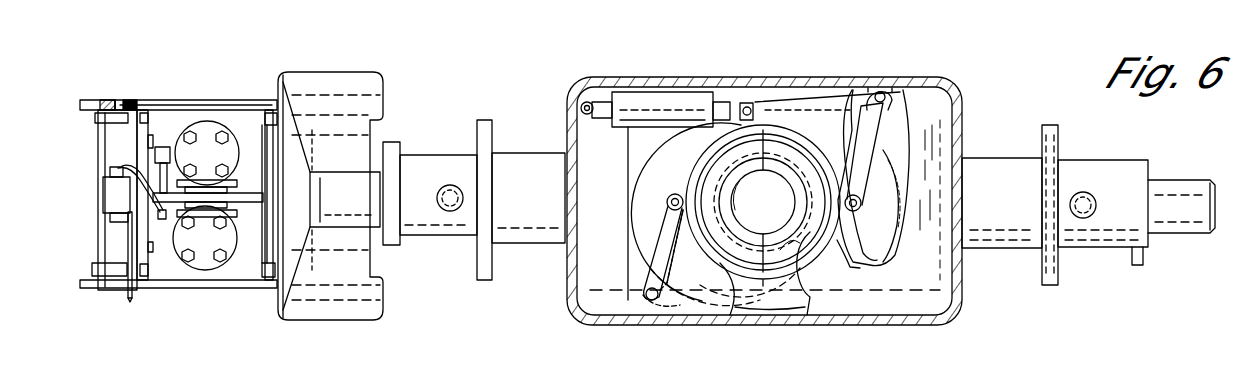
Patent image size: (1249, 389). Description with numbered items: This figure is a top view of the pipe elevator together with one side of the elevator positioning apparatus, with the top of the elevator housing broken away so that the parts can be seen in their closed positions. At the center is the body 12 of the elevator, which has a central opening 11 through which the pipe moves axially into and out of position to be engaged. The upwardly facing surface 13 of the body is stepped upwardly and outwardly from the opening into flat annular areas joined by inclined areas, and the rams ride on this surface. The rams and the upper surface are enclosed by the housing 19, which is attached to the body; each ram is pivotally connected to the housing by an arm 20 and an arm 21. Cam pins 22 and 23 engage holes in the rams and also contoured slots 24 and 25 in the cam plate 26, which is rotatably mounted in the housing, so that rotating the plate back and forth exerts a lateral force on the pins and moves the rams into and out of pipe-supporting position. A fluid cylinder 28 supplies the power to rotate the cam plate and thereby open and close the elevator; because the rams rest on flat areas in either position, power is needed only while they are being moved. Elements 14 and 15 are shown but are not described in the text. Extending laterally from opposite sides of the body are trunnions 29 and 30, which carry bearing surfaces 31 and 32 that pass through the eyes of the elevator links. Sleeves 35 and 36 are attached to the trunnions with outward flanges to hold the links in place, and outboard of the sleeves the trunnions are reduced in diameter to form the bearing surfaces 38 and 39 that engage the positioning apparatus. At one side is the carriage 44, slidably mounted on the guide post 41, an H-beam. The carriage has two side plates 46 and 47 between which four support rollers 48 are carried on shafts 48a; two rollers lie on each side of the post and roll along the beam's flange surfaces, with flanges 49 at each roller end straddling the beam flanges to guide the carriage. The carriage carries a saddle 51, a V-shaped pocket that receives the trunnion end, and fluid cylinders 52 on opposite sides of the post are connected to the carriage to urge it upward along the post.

The central opening 11 is at (773, 198).
The body 12 is at (637, 188).
The upwardly facing surface 13 is at (660, 165).
The hub ring 14 is at (807, 140).
The lower cam segment 15 is at (727, 260).
The housing 19 is at (955, 92).
The arm 20 is at (873, 142).
The arm 21 is at (643, 267).
The cam pin 22 is at (880, 92).
The cam pin 23 is at (663, 200).
The contoured slot 24 is at (857, 118).
The contoured slot 25 is at (678, 293).
The cam plate 26 is at (795, 103).
The fluid cylinder 28 is at (640, 100).
The trunnion 29 is at (1005, 255).
The trunnion 30 is at (423, 130).
The bearing surface 31 is at (477, 145).
The bearing surface 32 is at (536, 197).
The sleeve 35 is at (1131, 199).
The sleeve 36 is at (424, 199).
The bearing surface 38 is at (1185, 180).
The bearing surface 39 is at (356, 201).
The guide post 41 is at (257, 245).
The carriage 44 is at (170, 302).
The side plate 46 is at (160, 98).
The side plate 47 is at (95, 292).
The support roller 48 is at (98, 182).
The shaft 48a is at (118, 100).
The flange 49 is at (93, 115).
The saddle 51 is at (337, 308).
The fluid cylinder 52 is at (203, 125).